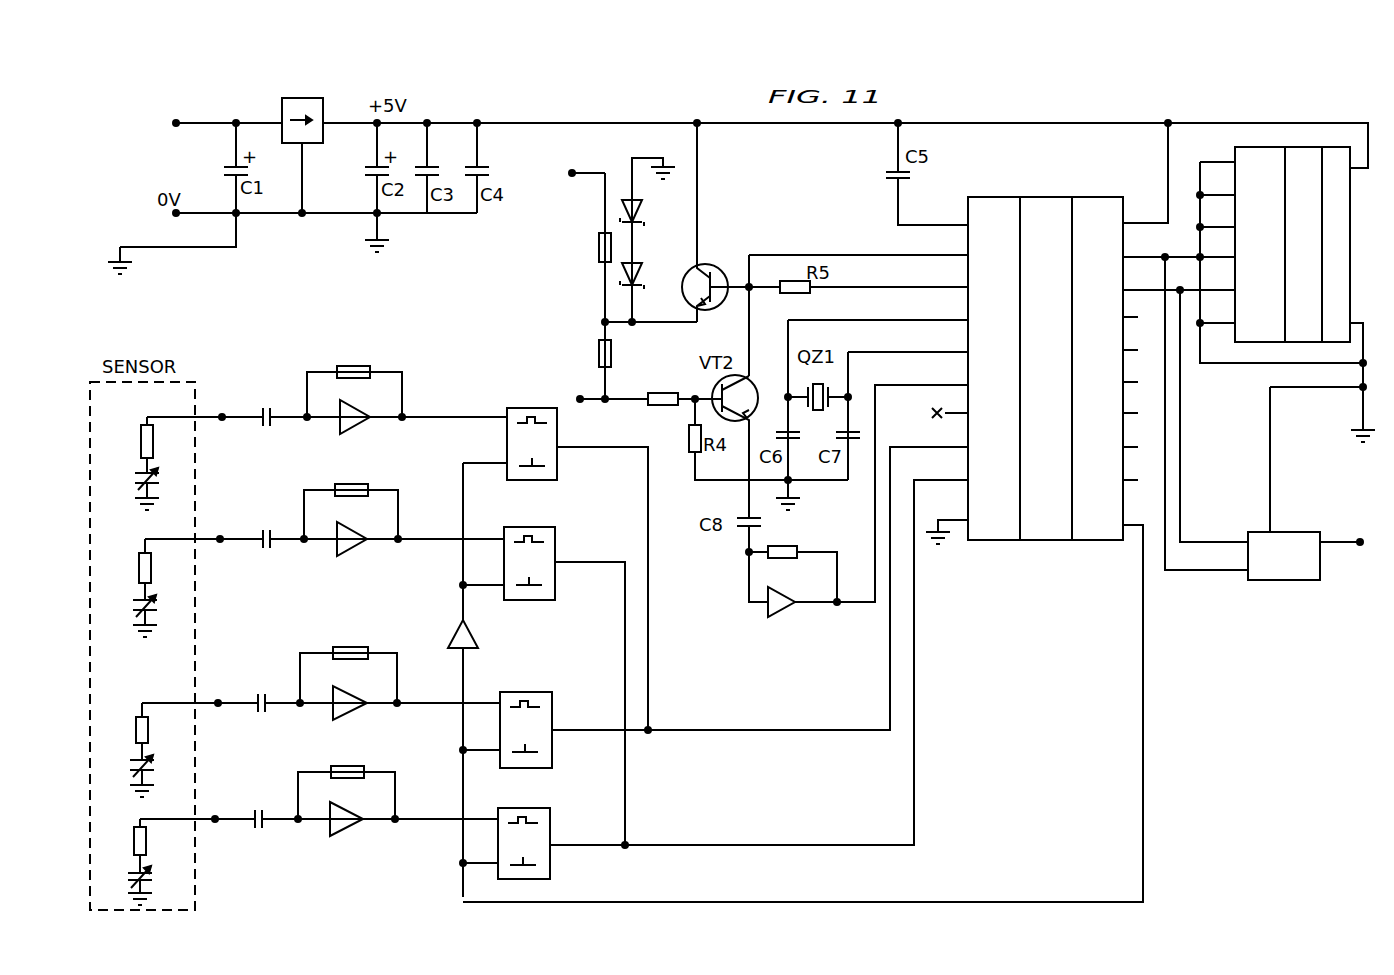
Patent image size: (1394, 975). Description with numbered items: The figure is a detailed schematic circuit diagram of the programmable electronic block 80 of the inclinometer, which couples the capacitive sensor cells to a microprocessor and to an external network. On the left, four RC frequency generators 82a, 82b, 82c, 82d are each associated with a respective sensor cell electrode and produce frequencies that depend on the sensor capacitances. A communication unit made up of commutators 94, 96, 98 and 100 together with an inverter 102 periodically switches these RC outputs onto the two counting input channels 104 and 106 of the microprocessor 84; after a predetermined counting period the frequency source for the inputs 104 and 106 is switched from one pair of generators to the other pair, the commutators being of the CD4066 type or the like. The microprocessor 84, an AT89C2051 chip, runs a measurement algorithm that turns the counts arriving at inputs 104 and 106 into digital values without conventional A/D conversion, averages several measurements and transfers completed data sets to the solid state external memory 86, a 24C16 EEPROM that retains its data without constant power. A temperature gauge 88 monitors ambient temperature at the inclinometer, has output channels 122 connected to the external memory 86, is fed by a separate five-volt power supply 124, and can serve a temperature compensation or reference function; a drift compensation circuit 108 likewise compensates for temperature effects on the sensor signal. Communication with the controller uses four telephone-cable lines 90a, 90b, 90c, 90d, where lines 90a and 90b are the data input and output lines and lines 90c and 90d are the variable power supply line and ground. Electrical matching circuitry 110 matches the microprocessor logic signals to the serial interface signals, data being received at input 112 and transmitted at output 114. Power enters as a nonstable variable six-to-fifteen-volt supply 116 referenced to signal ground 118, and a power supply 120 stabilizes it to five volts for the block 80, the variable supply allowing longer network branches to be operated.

The programmable electronic block 80 is at (640, 103).
The RC frequency generator 82a is at (307, 372).
The RC frequency generator 82b is at (304, 497).
The RC frequency generator 82c is at (300, 665).
The RC frequency generator 82d is at (298, 790).
The microprocessor 84 is at (1045, 197).
The solid state external memory 86 is at (1300, 147).
The temperature gauge 88 is at (1295, 582).
The power/data line 90a is at (523, 122).
The power/data line 90b is at (183, 250).
The power/data line 90c is at (605, 170).
The power/data line 90d is at (628, 406).
The commutator 94 is at (509, 408).
The commutator 96 is at (540, 527).
The commutator 98 is at (535, 692).
The commutator 100 is at (530, 808).
The inverter 102 is at (472, 648).
The counting input channel 104 is at (890, 672).
The counting input channel 106 is at (916, 630).
The drift compensation circuit 108 is at (757, 612).
The electrical matching circuitry 110 is at (742, 227).
The input 112 is at (581, 405).
The output 114 is at (573, 180).
The nonstable variable power supply 116 is at (220, 118).
The signal ground 118 is at (148, 246).
The power supply 120 is at (323, 98).
The output channels 122 is at (1207, 582).
The 5V power supply 124 is at (1345, 550).